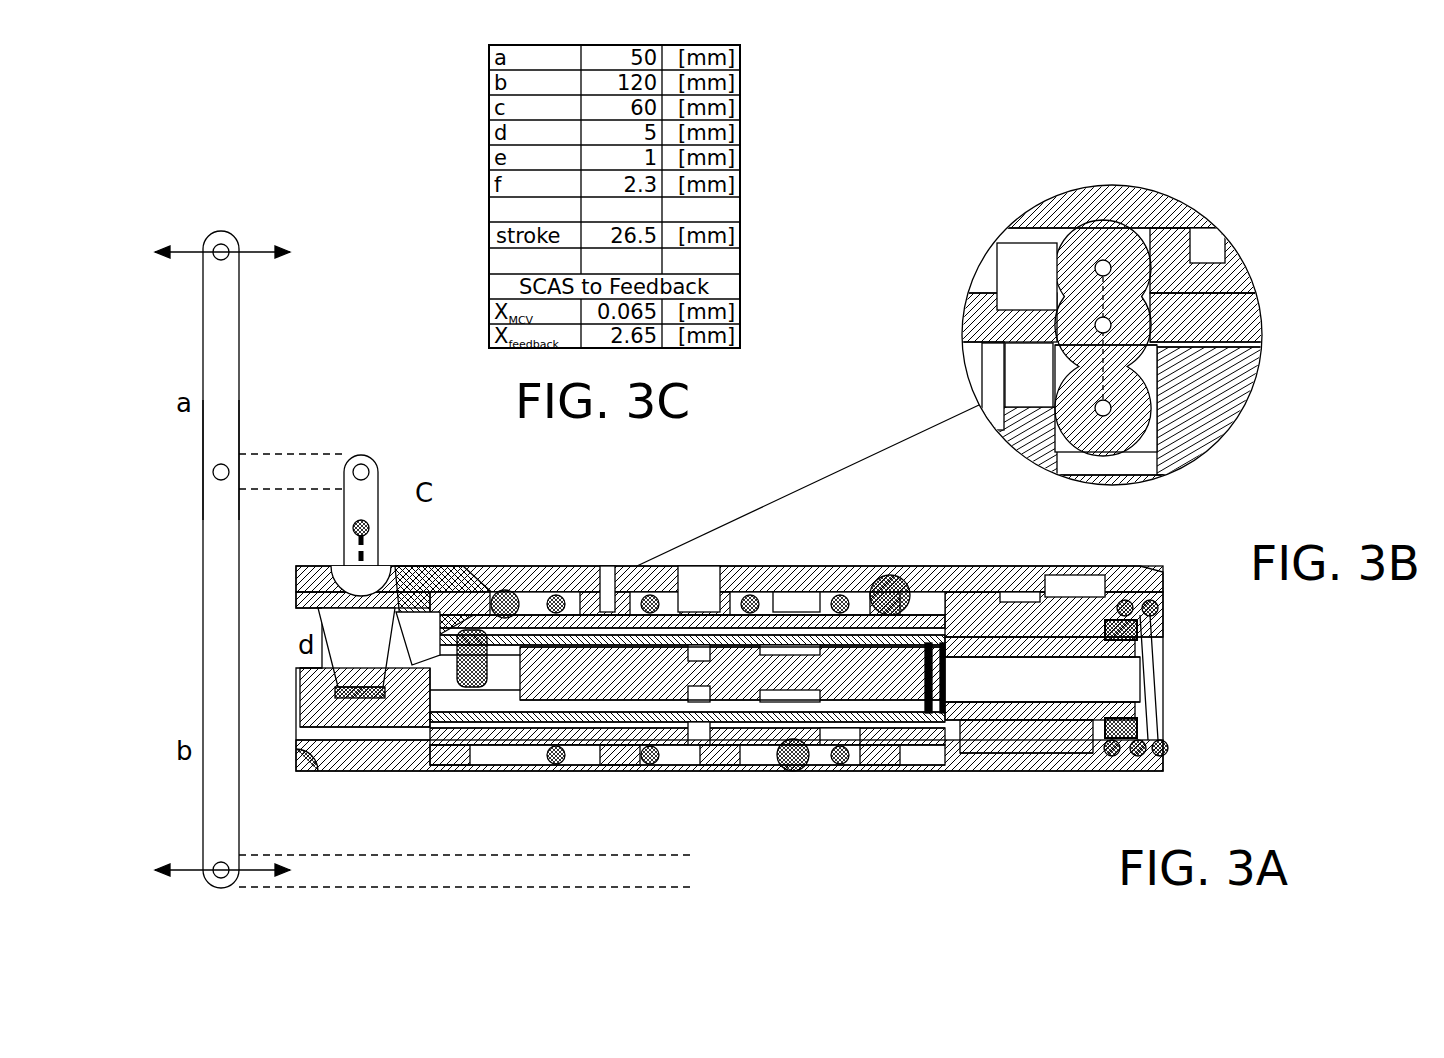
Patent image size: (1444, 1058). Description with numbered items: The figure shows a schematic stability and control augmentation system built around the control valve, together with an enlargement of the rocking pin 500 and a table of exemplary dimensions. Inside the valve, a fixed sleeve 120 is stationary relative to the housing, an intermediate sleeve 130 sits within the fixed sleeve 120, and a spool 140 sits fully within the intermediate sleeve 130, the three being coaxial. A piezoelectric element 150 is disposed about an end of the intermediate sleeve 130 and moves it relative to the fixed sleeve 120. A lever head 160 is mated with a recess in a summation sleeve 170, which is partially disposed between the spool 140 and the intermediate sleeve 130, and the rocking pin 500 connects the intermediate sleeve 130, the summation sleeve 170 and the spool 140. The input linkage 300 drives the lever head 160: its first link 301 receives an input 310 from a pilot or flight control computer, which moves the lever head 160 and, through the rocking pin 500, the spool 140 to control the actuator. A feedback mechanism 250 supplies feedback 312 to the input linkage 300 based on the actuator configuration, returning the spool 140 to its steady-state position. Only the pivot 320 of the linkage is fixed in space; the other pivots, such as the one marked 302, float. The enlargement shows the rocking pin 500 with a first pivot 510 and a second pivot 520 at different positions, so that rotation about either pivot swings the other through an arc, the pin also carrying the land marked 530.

In FIG. 3A, the input 310 is at (250, 247).
In FIG. 3A, the first link 301 is at (226, 342).
In FIG. 3A, the input linkage 300 is at (226, 430).
In FIG. 3A, the feedback lever 302 is at (362, 500).
In FIG. 3A, the pivot 320 is at (345, 530).
In FIG. 3A, the feedback 312 is at (188, 882).
In FIG. 3A, the feedback mechanism 250 is at (400, 873).
In FIG. 3A, the intermediate sleeve 130 is at (826, 566).
In FIG. 3B, the intermediate sleeve 130 is at (1262, 272).
In FIG. 3A, the summation sleeve 170 is at (462, 566).
In FIG. 3B, the summation sleeve 170 is at (1228, 325).
In FIG. 3A, the rocking pin 500 is at (494, 566).
In FIG. 3B, the rocking pin 500 is at (1135, 288).
In FIG. 3A, the spool 140 is at (665, 680).
In FIG. 3B, the spool 140 is at (1218, 395).
In FIG. 3A, the fixed sleeve 120 is at (490, 753).
In FIG. 3A, the lever head 160 is at (376, 727).
In FIG. 3A, the piezoelectric element 150 is at (1043, 771).
In FIG. 3B, the first pivot 510 is at (1030, 243).
In FIG. 3B, the second pivot 520 is at (1158, 363).
In FIG. 3B, the spool land 530 is at (1097, 410).